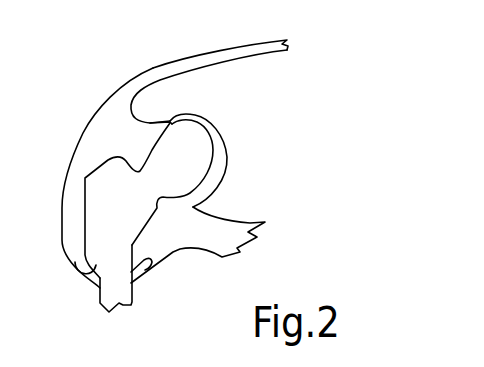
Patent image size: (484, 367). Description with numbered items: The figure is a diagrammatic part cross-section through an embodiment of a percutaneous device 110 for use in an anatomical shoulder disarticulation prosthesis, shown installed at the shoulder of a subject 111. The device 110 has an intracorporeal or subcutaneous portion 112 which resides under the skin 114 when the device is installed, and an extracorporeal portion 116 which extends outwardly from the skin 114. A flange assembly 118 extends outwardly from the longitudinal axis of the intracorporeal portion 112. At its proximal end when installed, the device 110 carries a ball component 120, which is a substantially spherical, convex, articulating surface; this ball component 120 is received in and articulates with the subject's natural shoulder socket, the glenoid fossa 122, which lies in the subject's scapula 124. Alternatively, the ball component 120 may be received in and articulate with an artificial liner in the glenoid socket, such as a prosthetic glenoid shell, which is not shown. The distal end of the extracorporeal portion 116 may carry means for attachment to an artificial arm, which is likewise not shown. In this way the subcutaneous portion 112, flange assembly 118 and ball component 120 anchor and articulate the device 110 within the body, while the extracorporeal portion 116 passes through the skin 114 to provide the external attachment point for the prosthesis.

The percutaneous device 110 is at (80, 212).
The subject 111 is at (152, 68).
The intracorporeal or subcutaneous portion 112 is at (100, 255).
The skin 114 is at (64, 176).
The extracorporeal portion 116 is at (108, 293).
The flange assembly 118 is at (136, 268).
The ball component 120 is at (186, 143).
The shoulder socket (glenoid fossa) 122 is at (170, 122).
The scapula 124 is at (238, 82).